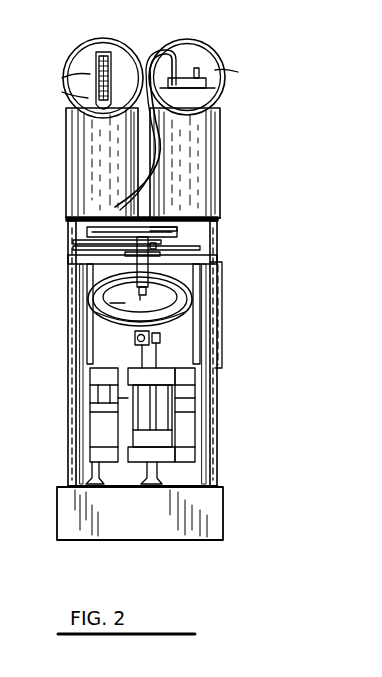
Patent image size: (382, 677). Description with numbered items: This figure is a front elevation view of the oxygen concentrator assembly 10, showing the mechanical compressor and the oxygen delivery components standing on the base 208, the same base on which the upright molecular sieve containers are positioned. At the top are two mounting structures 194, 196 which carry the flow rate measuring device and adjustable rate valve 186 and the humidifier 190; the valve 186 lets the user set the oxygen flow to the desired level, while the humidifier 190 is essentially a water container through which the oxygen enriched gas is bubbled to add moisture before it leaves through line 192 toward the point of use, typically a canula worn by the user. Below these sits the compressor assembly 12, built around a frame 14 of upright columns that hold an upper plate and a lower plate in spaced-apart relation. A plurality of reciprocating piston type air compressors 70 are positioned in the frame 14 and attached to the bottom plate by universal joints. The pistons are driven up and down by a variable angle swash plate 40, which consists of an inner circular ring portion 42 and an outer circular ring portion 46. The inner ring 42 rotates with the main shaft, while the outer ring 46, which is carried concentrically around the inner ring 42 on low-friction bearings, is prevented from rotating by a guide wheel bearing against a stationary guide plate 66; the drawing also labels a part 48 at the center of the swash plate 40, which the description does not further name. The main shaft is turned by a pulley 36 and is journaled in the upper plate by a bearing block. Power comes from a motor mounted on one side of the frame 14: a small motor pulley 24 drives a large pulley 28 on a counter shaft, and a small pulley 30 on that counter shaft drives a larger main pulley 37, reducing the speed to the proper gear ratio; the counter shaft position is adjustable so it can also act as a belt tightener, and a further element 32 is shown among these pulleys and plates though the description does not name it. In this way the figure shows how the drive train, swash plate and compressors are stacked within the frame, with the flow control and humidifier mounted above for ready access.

The oxygen concentrator assembly 10 is at (218, 40).
The compressor assembly 12 is at (226, 272).
The frame 14 is at (219, 388).
The motor pulley 24 is at (158, 249).
The large pulley 28 is at (80, 246).
The small pulley 30 is at (86, 232).
The lower plate 32 is at (72, 250).
The pulley 36 is at (182, 213).
The main pulley 37 is at (178, 228).
The variable angle swash plate 40 is at (88, 298).
The inner circular ring portion 42 is at (102, 309).
The outer circular ring portion 46 is at (120, 322).
The dish center 48 is at (178, 297).
The stationary guide plate 66 is at (222, 336).
The reciprocating piston type air compressor 70 is at (180, 422).
The flow rate measuring device and adjustable rate valve 186 is at (98, 72).
The humidifier 190 is at (216, 86).
The line 192 is at (160, 153).
The mounting structure 194 is at (67, 100).
The mounting structure 196 is at (222, 168).
The base 208 is at (223, 505).